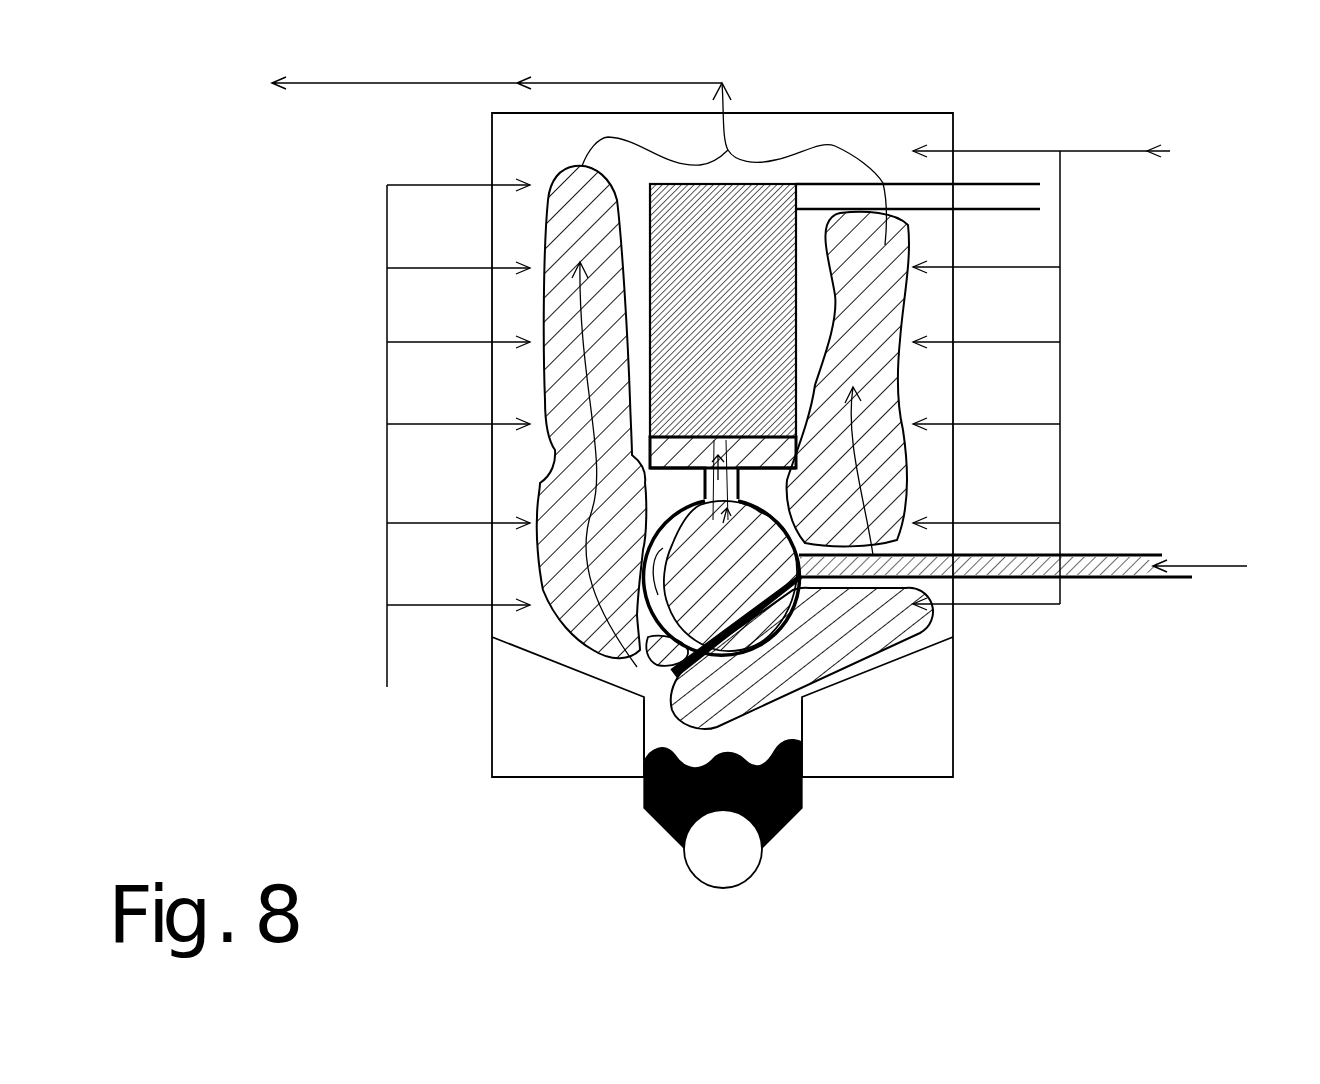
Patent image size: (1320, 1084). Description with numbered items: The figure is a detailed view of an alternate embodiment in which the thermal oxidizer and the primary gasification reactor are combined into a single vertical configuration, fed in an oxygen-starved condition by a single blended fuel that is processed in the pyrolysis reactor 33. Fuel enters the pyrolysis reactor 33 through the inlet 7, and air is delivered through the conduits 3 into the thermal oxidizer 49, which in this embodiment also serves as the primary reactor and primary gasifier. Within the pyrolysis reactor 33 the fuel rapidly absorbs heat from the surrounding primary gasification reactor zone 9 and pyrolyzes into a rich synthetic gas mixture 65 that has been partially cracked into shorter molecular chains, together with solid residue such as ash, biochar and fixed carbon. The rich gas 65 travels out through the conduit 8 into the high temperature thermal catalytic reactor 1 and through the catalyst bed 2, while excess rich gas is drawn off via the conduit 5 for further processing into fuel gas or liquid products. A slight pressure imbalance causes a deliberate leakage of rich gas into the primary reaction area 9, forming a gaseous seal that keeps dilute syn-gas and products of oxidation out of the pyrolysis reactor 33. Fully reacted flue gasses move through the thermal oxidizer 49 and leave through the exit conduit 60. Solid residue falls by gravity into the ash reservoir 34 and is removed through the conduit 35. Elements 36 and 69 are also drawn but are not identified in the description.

The thermal catalytic reactor 1 is at (772, 184).
The catalyst bed 2 is at (771, 256).
The conduits 3 is at (387, 267).
The conduit 5 is at (1003, 196).
The inlet 7 is at (1221, 563).
The conduit 8 is at (689, 490).
The primary gasification reactor zone 9 is at (915, 428).
The pyrolysis reactor 33 is at (987, 555).
The ash reservoir 34 is at (747, 863).
The conduit 35 is at (745, 898).
The outlet 36 is at (696, 738).
The thermal oxidizer 49 is at (492, 142).
The exit conduit 60 is at (533, 147).
The rich synthetic gas mixture 65 is at (725, 575).
The housing portion 69 is at (802, 798).